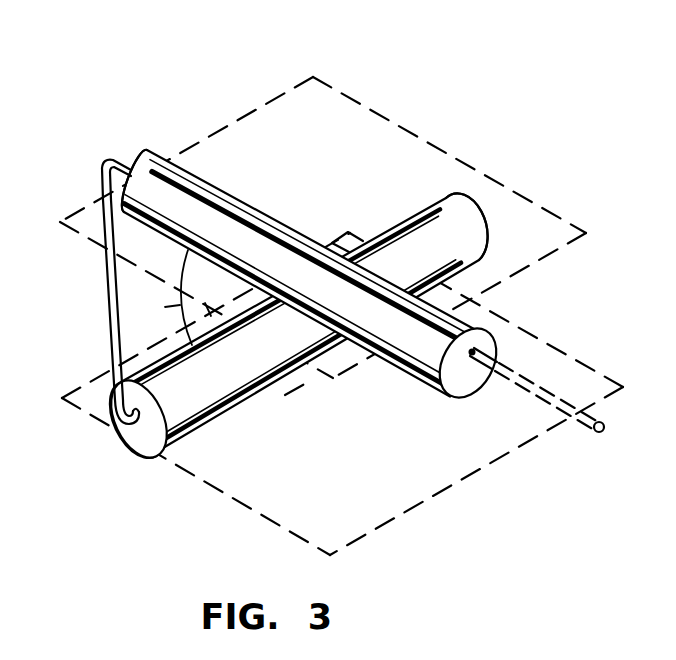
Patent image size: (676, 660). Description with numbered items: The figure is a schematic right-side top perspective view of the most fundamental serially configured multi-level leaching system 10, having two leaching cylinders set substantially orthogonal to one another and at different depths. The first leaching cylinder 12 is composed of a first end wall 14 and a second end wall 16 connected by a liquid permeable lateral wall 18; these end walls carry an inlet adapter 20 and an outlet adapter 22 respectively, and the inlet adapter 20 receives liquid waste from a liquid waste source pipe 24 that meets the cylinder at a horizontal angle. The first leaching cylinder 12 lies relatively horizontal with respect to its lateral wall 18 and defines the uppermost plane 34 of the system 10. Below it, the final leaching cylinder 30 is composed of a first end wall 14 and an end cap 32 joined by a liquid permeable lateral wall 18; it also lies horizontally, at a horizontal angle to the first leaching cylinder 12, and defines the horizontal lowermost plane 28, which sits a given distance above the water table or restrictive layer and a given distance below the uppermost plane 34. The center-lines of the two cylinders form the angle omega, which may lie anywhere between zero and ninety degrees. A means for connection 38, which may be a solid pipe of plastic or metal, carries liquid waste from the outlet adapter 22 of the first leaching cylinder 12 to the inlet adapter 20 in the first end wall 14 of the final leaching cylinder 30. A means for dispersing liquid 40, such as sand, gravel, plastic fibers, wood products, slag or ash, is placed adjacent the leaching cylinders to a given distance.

The system 10 is at (322, 283).
The first leaching cylinder 12 is at (363, 264).
The first end wall 14 is at (322, 394).
The second end wall 16 is at (143, 147).
The liquid permeable lateral wall 18 is at (264, 203).
The inlet adapter 20 is at (437, 386).
The outlet adapter 22 is at (130, 162).
The liquid waste source pipe 24 is at (560, 412).
The horizontal lowermost plane 28 is at (78, 400).
The final leaching cylinder 30 is at (323, 329).
The end cap 32 is at (480, 219).
The uppermost plane 34 is at (433, 150).
The means for connection 38 is at (93, 267).
The means for dispersing liquid 40 is at (300, 388).